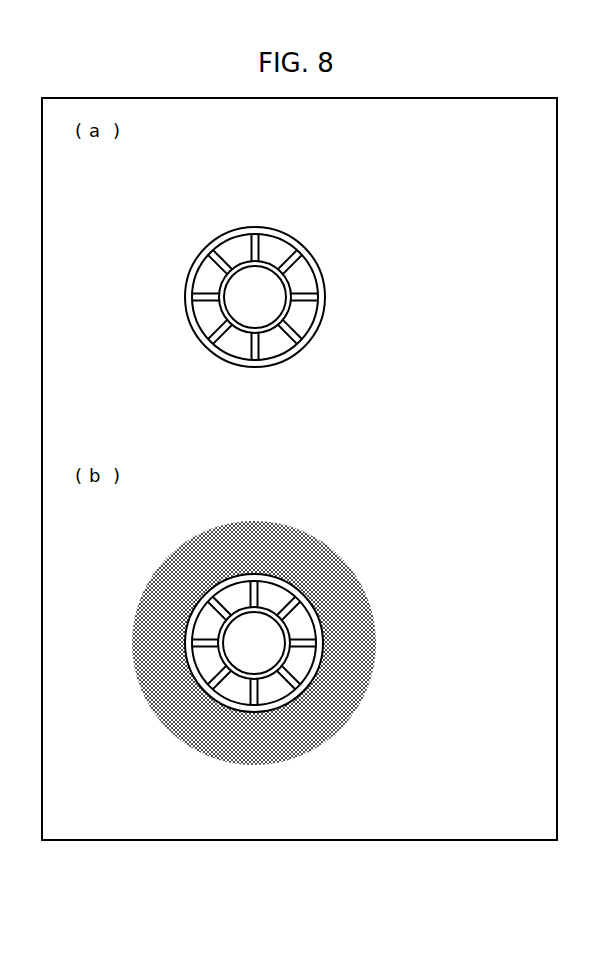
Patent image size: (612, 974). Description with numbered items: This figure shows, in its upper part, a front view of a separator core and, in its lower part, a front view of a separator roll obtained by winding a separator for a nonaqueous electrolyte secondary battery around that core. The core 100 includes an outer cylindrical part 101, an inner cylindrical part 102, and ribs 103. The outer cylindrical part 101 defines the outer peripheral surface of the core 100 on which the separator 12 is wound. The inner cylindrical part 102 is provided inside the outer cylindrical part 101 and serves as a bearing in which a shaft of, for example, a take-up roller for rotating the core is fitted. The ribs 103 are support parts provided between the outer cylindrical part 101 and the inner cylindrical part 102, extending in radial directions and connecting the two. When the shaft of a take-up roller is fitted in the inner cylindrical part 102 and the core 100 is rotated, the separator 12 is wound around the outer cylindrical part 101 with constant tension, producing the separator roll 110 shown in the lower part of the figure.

The core 100 is at (437, 226).
The outer cylindrical part 101 is at (297, 238).
The inner cylindrical part 102 is at (291, 288).
The ribs 103 is at (287, 266).
The separator roll 110 is at (487, 595).
The separator 12 is at (372, 670).